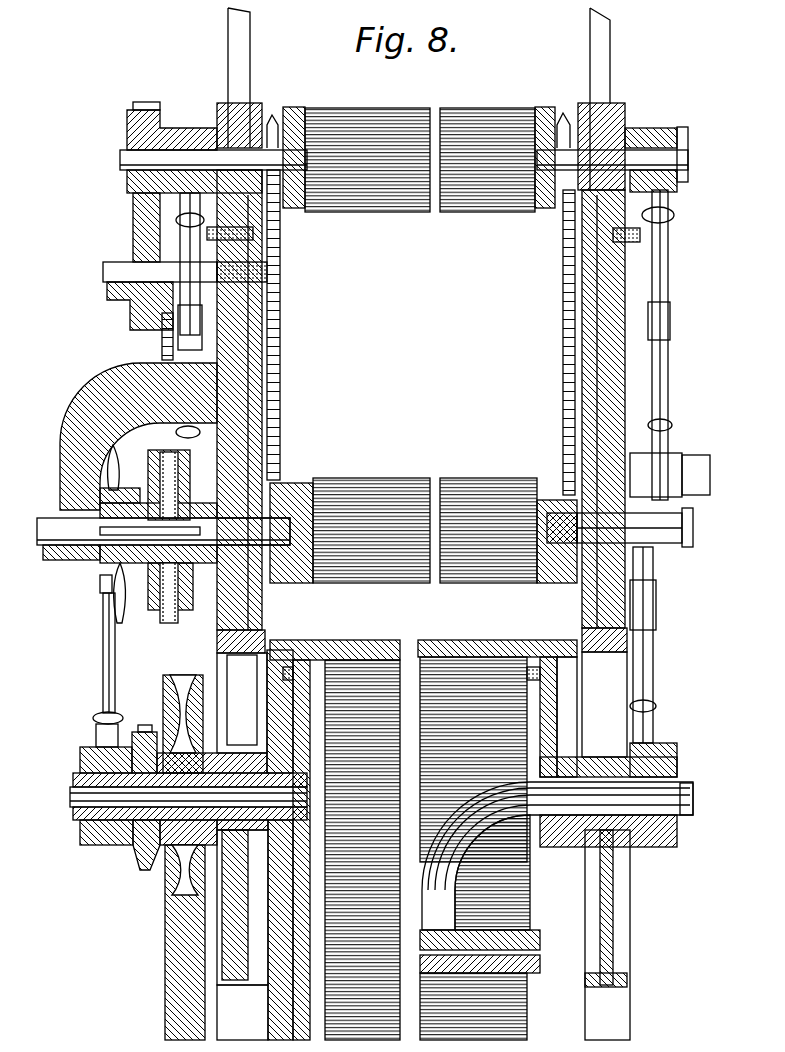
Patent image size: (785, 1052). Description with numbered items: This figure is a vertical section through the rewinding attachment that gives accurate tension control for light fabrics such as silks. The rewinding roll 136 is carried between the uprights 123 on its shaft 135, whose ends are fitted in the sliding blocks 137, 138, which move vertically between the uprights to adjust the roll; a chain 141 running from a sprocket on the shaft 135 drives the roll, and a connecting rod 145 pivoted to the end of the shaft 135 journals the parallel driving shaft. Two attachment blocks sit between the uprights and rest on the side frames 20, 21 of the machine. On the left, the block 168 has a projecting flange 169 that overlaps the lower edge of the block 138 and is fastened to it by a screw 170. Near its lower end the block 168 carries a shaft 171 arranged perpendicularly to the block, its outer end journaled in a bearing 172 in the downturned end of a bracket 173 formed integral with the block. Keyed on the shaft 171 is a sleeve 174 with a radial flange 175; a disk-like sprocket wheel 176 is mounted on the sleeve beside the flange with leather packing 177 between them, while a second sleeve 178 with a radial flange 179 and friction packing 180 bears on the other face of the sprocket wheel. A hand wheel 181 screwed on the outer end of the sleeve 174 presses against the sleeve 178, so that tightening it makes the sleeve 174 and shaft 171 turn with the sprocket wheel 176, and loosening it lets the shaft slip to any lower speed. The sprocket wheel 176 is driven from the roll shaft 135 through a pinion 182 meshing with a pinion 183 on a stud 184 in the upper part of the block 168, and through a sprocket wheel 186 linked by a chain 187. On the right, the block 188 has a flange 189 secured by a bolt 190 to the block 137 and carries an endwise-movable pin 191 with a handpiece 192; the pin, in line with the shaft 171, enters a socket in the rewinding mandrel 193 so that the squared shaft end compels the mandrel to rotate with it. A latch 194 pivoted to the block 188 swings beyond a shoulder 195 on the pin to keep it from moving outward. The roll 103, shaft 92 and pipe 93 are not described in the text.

The upright 123 is at (232, 46).
The sliding block 138 is at (235, 125).
The pinion 182 is at (128, 138).
The rewinding roll 136 is at (378, 120).
The bolt 190 is at (273, 118).
The sliding block 137 is at (612, 102).
The shaft 135 is at (675, 160).
The block 168 is at (250, 402).
The projecting flange 169 is at (258, 218).
The screw 170 is at (252, 240).
The chain 141 is at (562, 300).
The block 188 is at (590, 350).
The connecting rod 145 is at (668, 282).
The flange 189 is at (665, 218).
The latch 194 is at (640, 470).
The stud 184 is at (110, 272).
The pinion 183 is at (148, 302).
The chain 187 is at (125, 366).
The sprocket wheel 186 is at (182, 344).
The bracket 173 is at (78, 422).
The friction packing 180 is at (176, 430).
The sleeve 174 is at (166, 466).
The shaft 171 is at (55, 512).
The sprocket wheel 176 is at (246, 531).
The bearing 172 is at (75, 563).
The radial flange 179 is at (150, 590).
The hand wheel 181 is at (118, 575).
The second sleeve 178 is at (103, 640).
The packing 177 is at (173, 618).
The radial flange 175 is at (212, 612).
The side frame 21 is at (265, 645).
The roll 103 is at (245, 705).
The shaft 92 is at (308, 795).
The rewinding mandrel 193 is at (475, 540).
The endwise-movable pin 191 is at (580, 548).
The shoulder 195 is at (600, 545).
The handpiece 192 is at (688, 550).
The side frame 20 is at (612, 652).
The pipe 93 is at (660, 778).